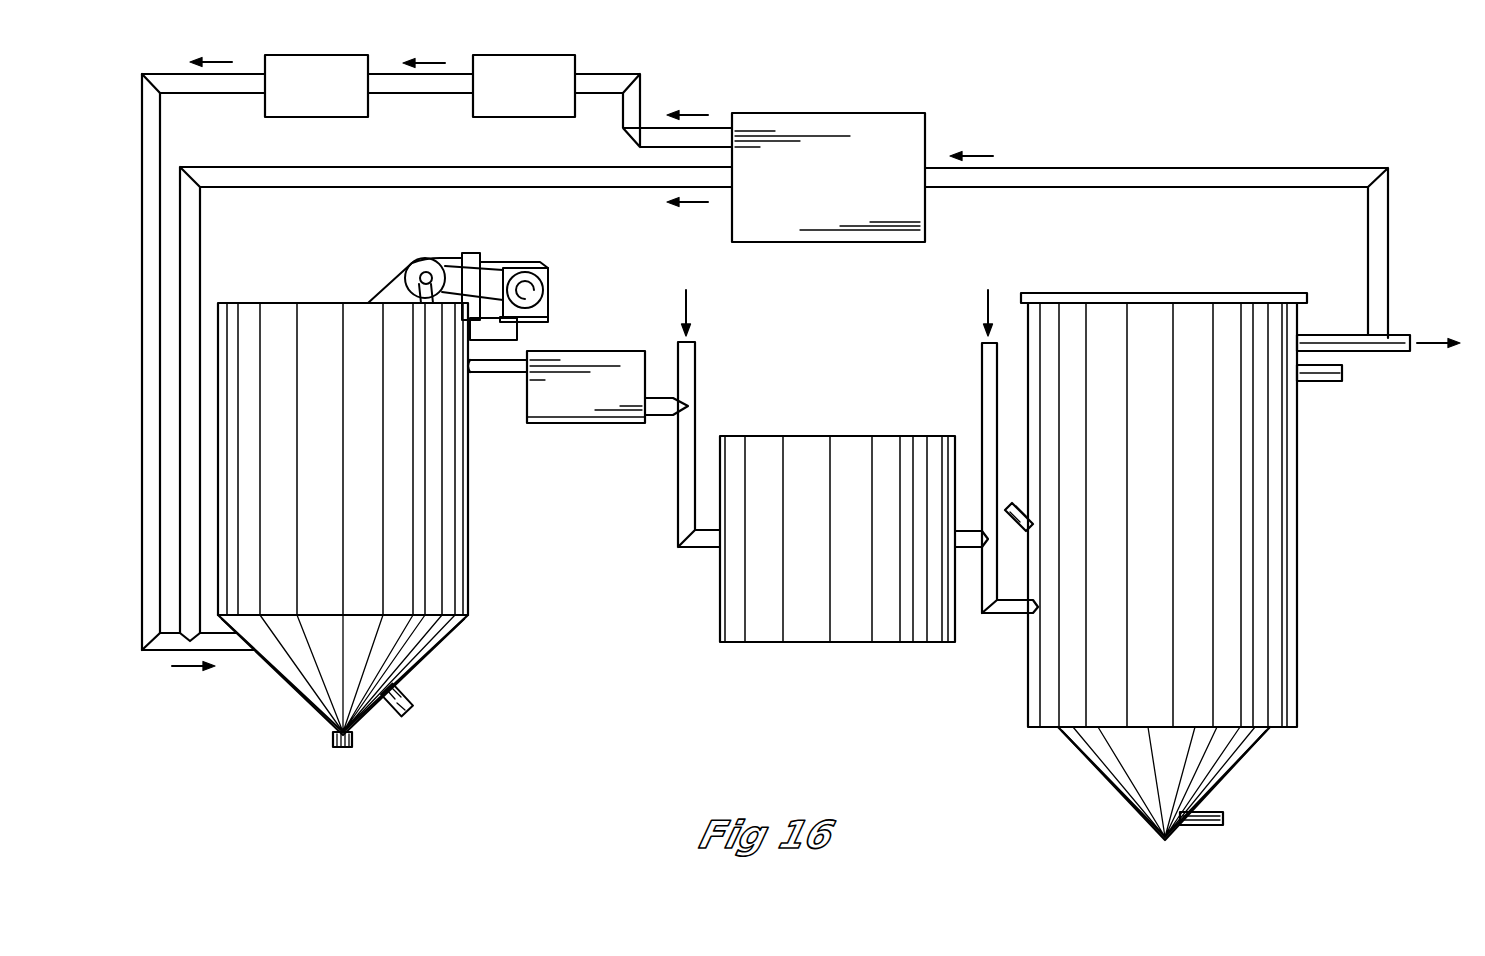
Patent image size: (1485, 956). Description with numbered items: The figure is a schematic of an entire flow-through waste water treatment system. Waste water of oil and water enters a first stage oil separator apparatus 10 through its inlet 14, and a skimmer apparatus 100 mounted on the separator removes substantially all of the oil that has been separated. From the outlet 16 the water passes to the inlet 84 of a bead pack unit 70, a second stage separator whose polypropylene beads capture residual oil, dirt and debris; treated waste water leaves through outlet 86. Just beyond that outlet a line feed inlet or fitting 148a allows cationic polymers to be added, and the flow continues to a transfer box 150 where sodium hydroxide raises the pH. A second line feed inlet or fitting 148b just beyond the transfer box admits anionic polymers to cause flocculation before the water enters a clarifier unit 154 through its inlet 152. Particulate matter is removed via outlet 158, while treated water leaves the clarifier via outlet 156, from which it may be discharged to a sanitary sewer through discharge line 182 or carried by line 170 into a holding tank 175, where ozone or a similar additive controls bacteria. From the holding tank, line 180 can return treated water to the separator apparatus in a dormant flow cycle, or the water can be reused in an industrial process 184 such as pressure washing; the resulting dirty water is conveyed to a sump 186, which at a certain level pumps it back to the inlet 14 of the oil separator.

The oil separator apparatus 10 is at (323, 340).
The inlet 14 is at (243, 650).
The outlet 16 is at (500, 362).
The bead pack unit 70 is at (545, 418).
The inlet 84 is at (527, 373).
The outlet 86 is at (648, 418).
The skimmer apparatus 100 is at (532, 242).
The line feed inlet or fitting 148a is at (772, 348).
The line feed inlet or fitting 148b is at (985, 408).
The transfer box 150 is at (850, 482).
The inlet 152 is at (1003, 618).
The clarifier unit 154 is at (1110, 312).
The outlet 156 is at (1320, 345).
The outlet 158 is at (1205, 828).
The line 170 is at (1166, 178).
The holding tank 175 is at (850, 196).
The line 180 is at (352, 175).
The discharge line 182 is at (1397, 352).
The industrial process 184 is at (547, 93).
The sump 186 is at (320, 117).